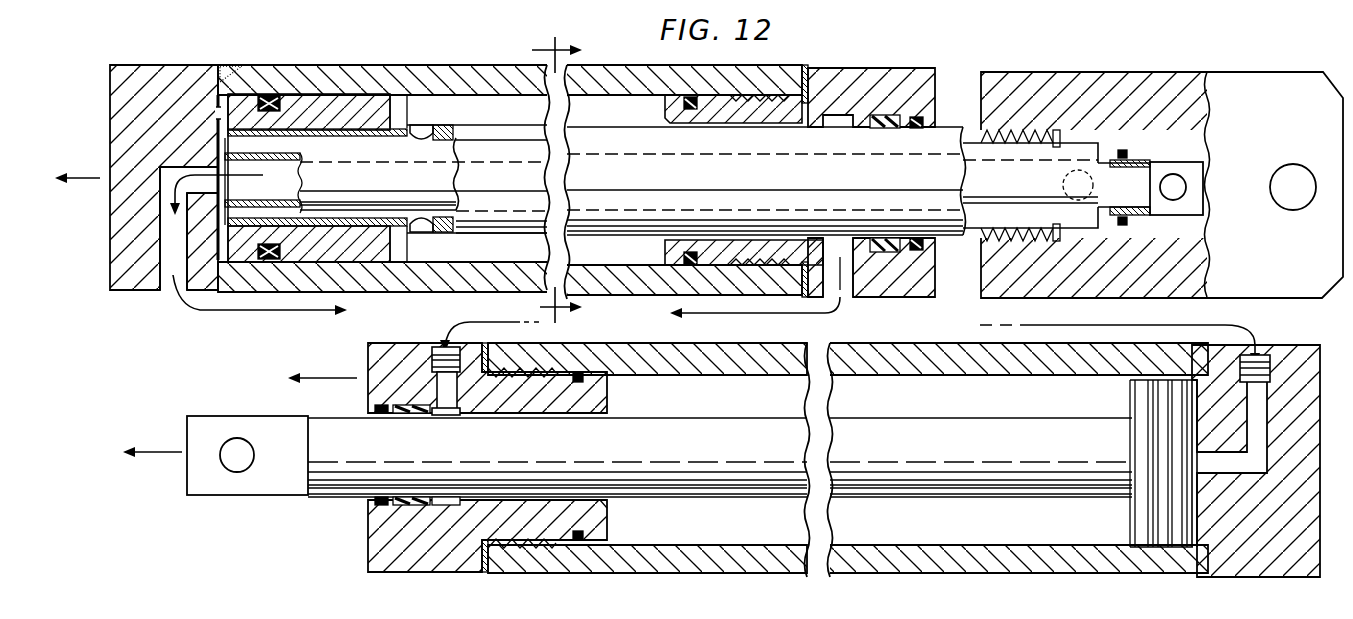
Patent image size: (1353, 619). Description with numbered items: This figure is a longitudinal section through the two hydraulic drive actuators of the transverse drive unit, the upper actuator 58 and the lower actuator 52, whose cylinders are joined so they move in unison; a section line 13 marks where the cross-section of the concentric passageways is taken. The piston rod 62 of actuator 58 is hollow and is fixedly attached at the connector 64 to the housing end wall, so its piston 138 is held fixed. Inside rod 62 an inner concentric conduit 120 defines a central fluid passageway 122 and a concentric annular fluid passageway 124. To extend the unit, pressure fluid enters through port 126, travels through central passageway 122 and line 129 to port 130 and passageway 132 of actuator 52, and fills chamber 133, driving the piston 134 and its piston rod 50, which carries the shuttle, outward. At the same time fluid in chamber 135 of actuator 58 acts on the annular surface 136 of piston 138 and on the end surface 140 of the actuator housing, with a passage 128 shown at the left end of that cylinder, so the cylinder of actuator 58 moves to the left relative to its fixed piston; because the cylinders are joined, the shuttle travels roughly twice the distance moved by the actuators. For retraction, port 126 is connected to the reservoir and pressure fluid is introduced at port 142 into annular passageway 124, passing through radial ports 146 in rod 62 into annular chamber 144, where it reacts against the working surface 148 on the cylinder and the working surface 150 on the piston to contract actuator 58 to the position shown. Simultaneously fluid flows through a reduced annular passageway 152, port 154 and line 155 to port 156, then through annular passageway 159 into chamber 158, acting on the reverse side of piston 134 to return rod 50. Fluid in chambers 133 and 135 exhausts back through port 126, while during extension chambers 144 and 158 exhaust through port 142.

The section line 13- 13 is at (557, 179).
The piston rod 50 is at (780, 467).
The drive actuator 52 is at (506, 577).
The drive actuator 58 is at (165, 59).
The piston rod 62 is at (680, 196).
The connector 64 is at (1231, 88).
The inner concentric conduit 120 is at (1013, 197).
The central fluid passageway 122 is at (1137, 178).
The concentric annular fluid passageway 124 is at (1077, 221).
The port 126 is at (1186, 188).
The passage 128 is at (162, 273).
The line 129 is at (266, 310).
The port 130 is at (1265, 352).
The passageway 132 is at (1260, 454).
The chamber 133 is at (1194, 503).
The piston 134 is at (1147, 519).
The chamber 135 is at (217, 137).
The annular surface 136 is at (217, 95).
The piston 138 is at (240, 97).
The end surface 140 is at (216, 113).
The port 142 is at (1080, 171).
The annular chamber 144 is at (498, 112).
The radial ports 146 is at (423, 126).
The working surface 148 is at (664, 113).
The working surface 150 is at (404, 95).
The reduced annular passageway 152 is at (664, 240).
The port 154 is at (843, 298).
The line 155 is at (486, 306).
The port 156 is at (443, 345).
The chamber 158 is at (777, 411).
The annular passageway 159 is at (588, 420).